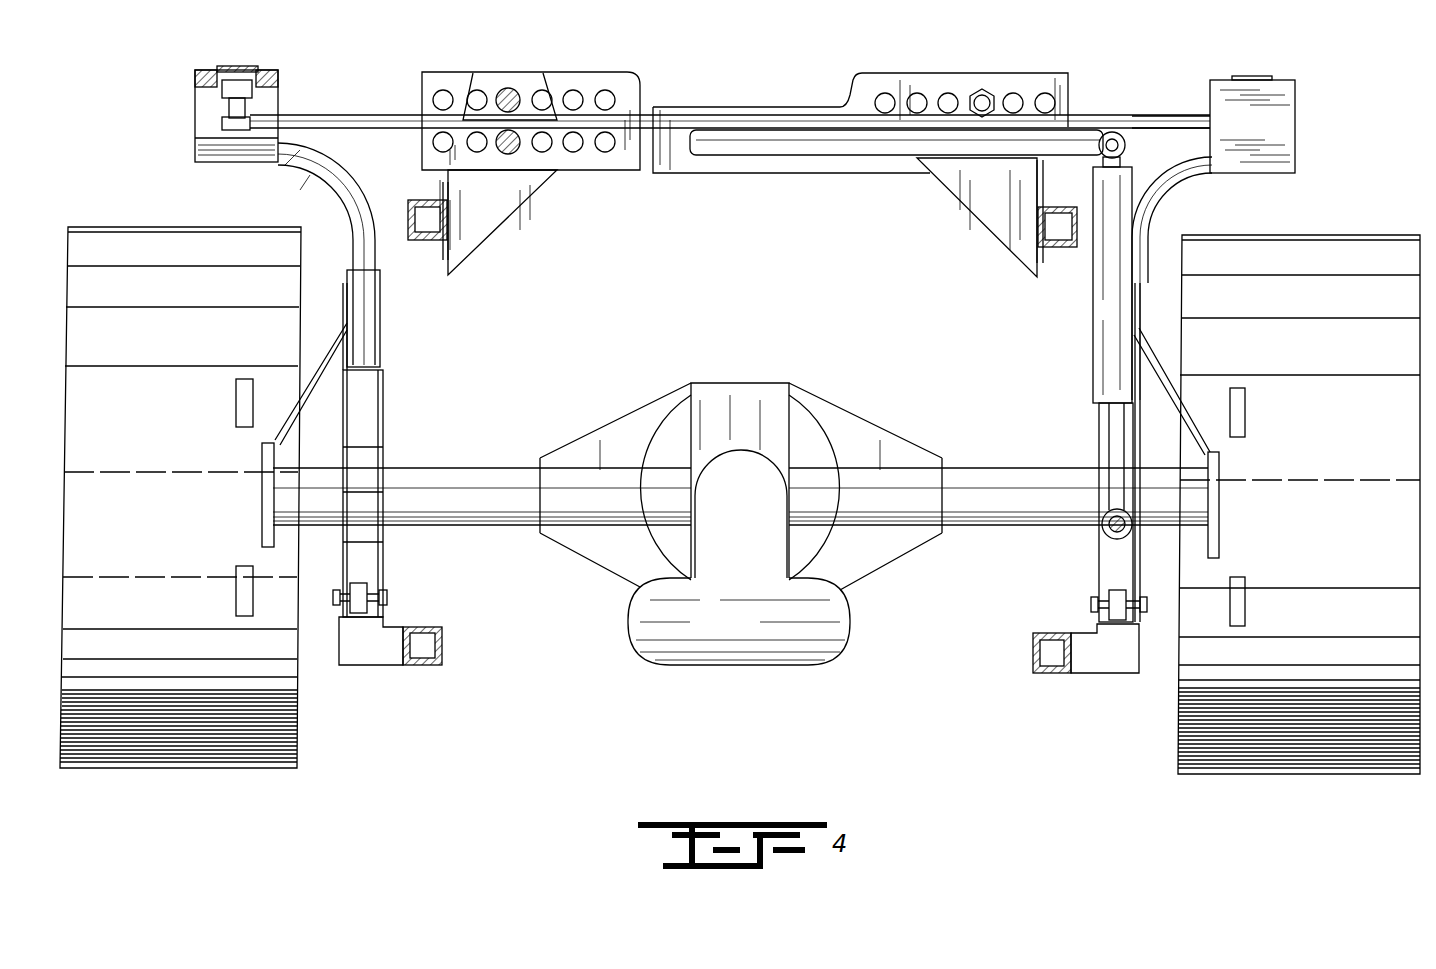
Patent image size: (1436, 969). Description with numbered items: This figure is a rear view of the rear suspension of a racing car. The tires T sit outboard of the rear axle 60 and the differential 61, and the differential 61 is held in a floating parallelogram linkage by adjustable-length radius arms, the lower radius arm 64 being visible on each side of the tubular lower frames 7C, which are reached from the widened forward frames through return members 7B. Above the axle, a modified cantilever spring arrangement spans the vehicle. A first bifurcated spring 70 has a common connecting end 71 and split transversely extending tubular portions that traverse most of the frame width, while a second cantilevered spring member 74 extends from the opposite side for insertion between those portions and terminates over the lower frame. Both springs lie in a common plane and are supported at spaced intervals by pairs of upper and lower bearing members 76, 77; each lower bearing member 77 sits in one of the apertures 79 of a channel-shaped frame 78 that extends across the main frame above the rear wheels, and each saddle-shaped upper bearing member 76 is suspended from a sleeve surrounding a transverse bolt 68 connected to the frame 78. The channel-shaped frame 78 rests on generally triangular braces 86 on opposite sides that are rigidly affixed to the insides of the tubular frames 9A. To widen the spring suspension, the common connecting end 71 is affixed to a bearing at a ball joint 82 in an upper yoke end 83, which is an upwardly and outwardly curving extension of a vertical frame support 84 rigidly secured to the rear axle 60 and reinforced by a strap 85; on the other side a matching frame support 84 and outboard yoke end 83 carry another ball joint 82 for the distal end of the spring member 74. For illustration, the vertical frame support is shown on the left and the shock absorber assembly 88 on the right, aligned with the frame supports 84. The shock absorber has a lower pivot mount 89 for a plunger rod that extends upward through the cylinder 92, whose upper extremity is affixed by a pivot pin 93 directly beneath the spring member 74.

The rear axle 60 is at (470, 468).
The differential 61 is at (790, 665).
The lower radius arm 64 is at (368, 590).
The transverse bolt 68 is at (508, 88).
The first bifurcated spring 70 is at (385, 115).
The common connecting end 71 is at (222, 120).
The cantilevered spring member 74 is at (1140, 118).
The upper bearing member 76 is at (477, 72).
The lower bearing member 77 is at (515, 152).
The channel-shaped frame 78 is at (610, 160).
The apertures 79 is at (915, 95).
The ball joint 82 is at (222, 92).
The upper yoke end 83 is at (195, 148).
The vertical frame support 84 is at (325, 192).
The strap 85 is at (318, 358).
The triangular brace 86 is at (485, 238).
The shock absorber assembly 88 is at (1090, 379).
The lower pivot mount 89 is at (1110, 530).
The cylinder 92 is at (1100, 338).
The pivot pin 93 is at (1112, 132).
The return members 7B is at (332, 665).
The lower frames 7C is at (430, 665).
The tubular frames 9A is at (415, 243).
The tires T is at (288, 715).